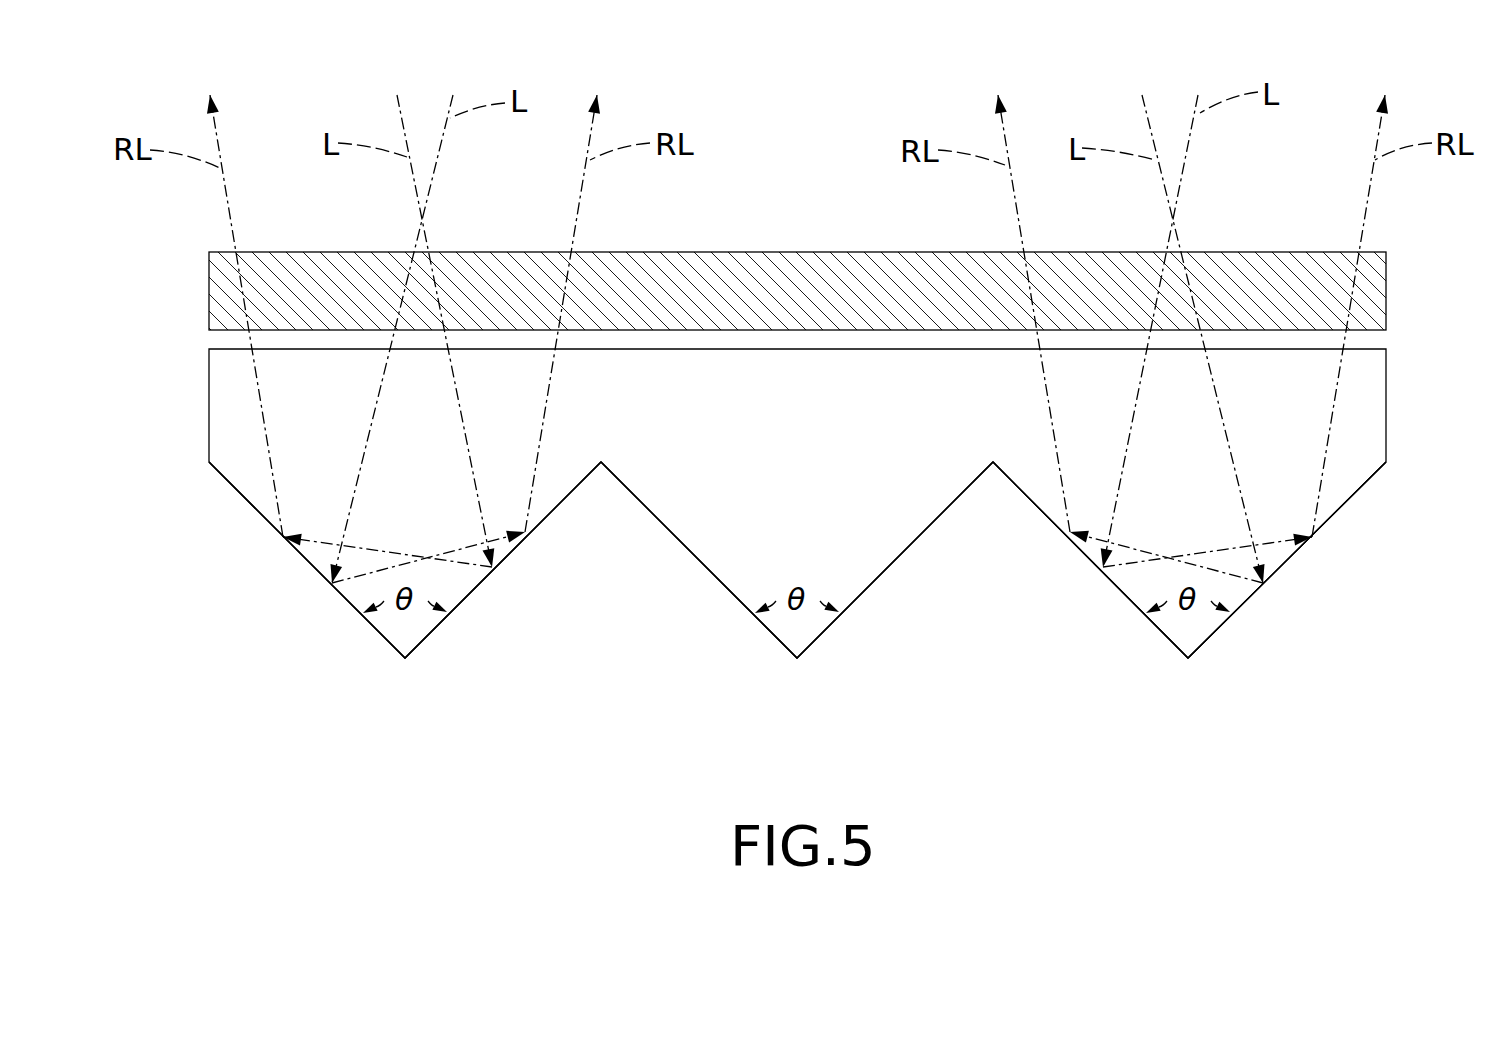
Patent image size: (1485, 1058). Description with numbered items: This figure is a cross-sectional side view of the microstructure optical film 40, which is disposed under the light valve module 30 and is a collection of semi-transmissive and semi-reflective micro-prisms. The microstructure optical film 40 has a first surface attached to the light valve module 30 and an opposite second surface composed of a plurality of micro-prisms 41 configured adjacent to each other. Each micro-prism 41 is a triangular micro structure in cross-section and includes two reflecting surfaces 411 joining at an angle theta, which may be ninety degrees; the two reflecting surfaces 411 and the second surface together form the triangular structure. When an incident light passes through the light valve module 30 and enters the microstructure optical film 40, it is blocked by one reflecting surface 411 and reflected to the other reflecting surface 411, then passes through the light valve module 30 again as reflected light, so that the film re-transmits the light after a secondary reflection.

The light valve module 30 is at (218, 296).
The microstructure optical film 40 is at (190, 410).
The micro-prism 41 is at (229, 477).
The reflecting surface 411 is at (308, 565).